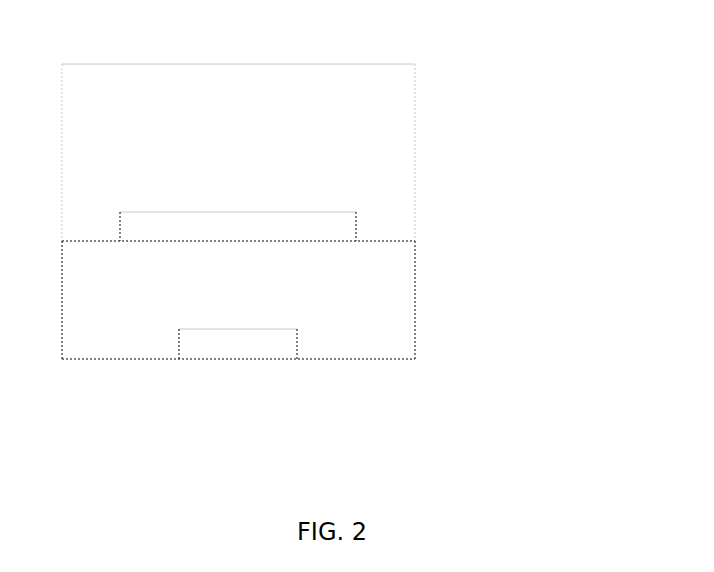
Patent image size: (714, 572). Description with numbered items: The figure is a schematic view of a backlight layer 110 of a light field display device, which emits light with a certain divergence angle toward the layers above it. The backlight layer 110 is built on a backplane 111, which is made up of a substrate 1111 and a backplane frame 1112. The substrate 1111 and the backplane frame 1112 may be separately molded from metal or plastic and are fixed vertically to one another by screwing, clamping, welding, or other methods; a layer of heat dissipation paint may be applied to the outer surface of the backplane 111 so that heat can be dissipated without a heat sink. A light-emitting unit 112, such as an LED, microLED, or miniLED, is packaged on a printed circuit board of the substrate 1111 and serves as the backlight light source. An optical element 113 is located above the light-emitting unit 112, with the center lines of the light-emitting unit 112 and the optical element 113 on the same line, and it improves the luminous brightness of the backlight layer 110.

The backlight layer 110 is at (503, 157).
The backplane 111 is at (475, 417).
The substrate 1111 is at (338, 359).
The backplane frame 1112 is at (415, 329).
The light-emitting unit 112 is at (246, 350).
The optical element 113 is at (357, 213).